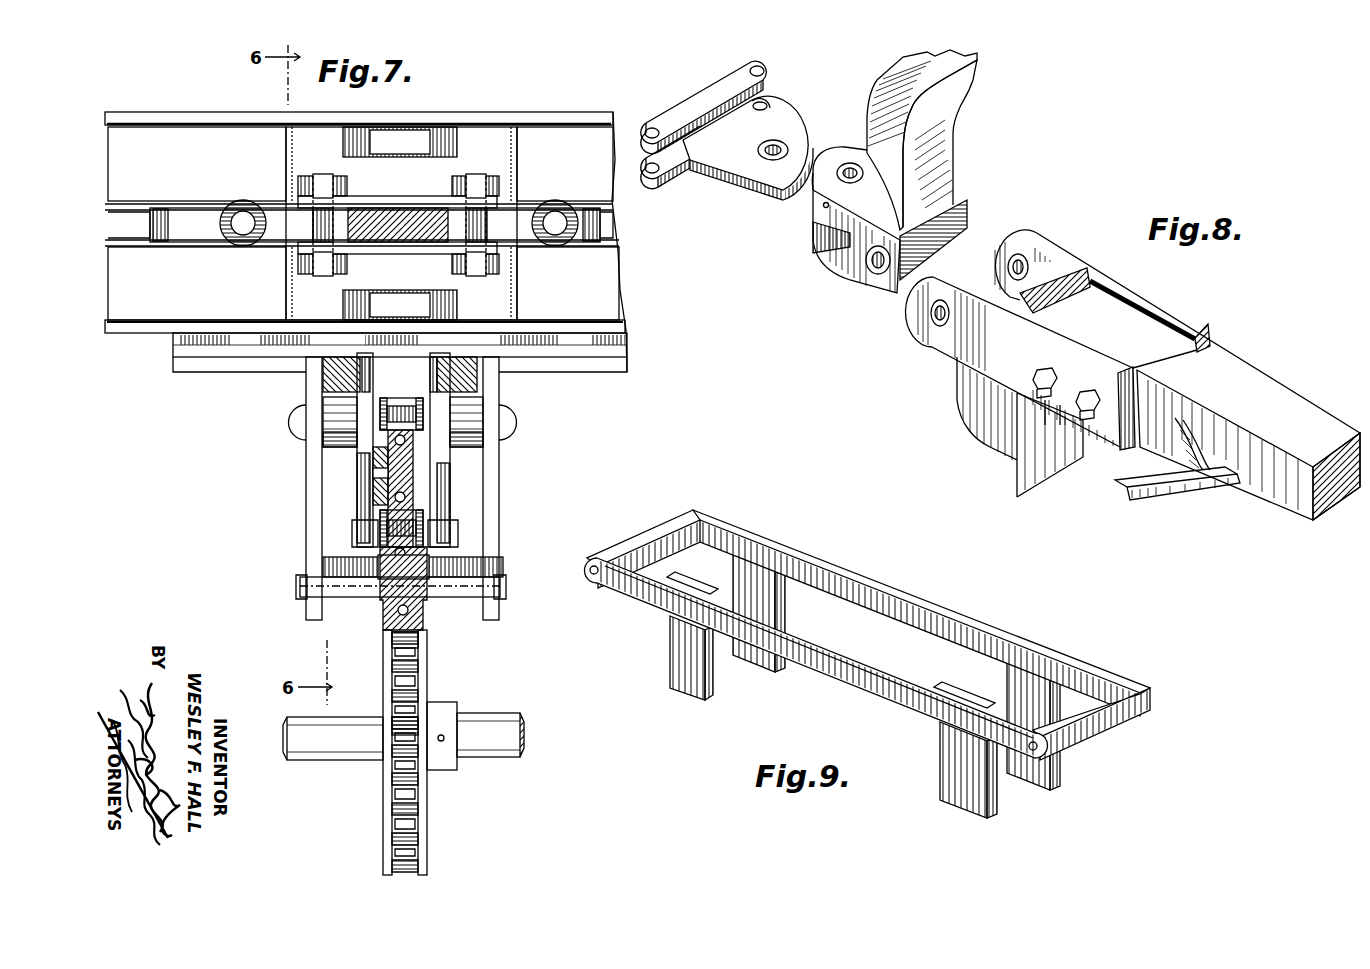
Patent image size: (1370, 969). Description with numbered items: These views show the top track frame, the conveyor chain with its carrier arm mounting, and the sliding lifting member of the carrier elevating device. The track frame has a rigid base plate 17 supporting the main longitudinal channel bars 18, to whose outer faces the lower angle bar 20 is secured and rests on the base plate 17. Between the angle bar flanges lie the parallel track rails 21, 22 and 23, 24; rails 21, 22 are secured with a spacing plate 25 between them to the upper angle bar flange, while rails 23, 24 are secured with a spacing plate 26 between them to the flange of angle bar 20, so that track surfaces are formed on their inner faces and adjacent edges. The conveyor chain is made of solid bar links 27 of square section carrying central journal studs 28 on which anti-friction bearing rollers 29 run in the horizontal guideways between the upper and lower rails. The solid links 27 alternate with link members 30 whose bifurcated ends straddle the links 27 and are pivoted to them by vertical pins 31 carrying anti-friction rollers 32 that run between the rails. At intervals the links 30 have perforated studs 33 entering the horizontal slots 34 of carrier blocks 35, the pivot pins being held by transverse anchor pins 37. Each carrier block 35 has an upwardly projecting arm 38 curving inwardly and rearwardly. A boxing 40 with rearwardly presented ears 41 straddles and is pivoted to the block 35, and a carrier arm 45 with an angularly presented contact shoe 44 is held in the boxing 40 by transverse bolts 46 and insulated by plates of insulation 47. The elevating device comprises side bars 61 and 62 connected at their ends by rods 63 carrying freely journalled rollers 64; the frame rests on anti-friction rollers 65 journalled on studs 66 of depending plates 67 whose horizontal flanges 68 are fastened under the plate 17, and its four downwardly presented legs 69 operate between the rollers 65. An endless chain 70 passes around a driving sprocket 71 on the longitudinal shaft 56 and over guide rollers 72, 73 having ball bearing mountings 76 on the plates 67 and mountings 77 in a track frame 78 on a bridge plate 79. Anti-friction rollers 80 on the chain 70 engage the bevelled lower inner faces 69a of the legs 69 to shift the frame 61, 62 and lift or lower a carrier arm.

In FIG. 7, the base plate 17 is at (627, 348).
In FIG. 7, the main longitudinal channel bars 18 is at (612, 228).
In FIG. 7, the lower angle bar 20 is at (183, 118).
In FIG. 7, the track rail 21 is at (470, 140).
In FIG. 7, the track rail 22 is at (197, 164).
In FIG. 7, the track rail 23 is at (505, 298).
In FIG. 7, the track rail 24 is at (197, 283).
In FIG. 7, the spacing plate 25 is at (400, 142).
In FIG. 7, the spacing plate 26 is at (400, 305).
In FIG. 7, the solid bar links 27 is at (195, 213).
In FIG. 7, the journal studs 28 is at (243, 211).
In FIG. 7, the anti-friction bearing rollers 29 is at (240, 241).
In FIG. 7, the link members 30 is at (398, 198).
In FIG. 8, the link members 30 is at (697, 101).
In FIG. 7, the vertical pins 31 is at (322, 274).
In FIG. 7, the anti-friction rollers 32 is at (316, 178).
In FIG. 7, the perforated studs 33 is at (418, 242).
In FIG. 8, the perforated studs 33 is at (740, 155).
In FIG. 8, the horizontal slots 34 is at (835, 238).
In FIG. 8, the carrier block 35 is at (860, 288).
In FIG. 8, the transverse anchor pins 37 is at (823, 206).
In FIG. 8, the upwardly projecting arm 38 is at (978, 73).
In FIG. 8, the boxing 40 is at (960, 343).
In FIG. 8, the rearwardly presented ears 41 is at (1010, 240).
In FIG. 8, the contact shoe 44 is at (1170, 500).
In FIG. 8, the carrier arm 45 is at (1258, 393).
In FIG. 8, the transverse bolts 46 is at (1085, 412).
In FIG. 8, the plates of insulation 47 is at (1175, 318).
In FIG. 7, the longitudinal shaft 56 is at (480, 724).
In FIG. 7, the side bar 61 is at (332, 358).
In FIG. 9, the side bar 61 is at (846, 678).
In FIG. 7, the side bar 62 is at (462, 358).
In FIG. 9, the side bar 62 is at (902, 615).
In FIG. 9, the rods 63 is at (592, 577).
In FIG. 9, the rollers 64 is at (643, 540).
In FIG. 7, the anti-friction rollers 65 is at (323, 440).
In FIG. 7, the studs 66 is at (330, 418).
In FIG. 7, the depending plates 67 is at (306, 512).
In FIG. 7, the horizontal flanges 68 is at (192, 373).
In FIG. 7, the legs 69 is at (358, 530).
In FIG. 9, the legs 69 is at (718, 672).
In FIG. 9, the bevelled lower inner faces 69a is at (778, 668).
In FIG. 7, the endless chain 70 is at (398, 405).
In FIG. 7, the driving sprocket 71 is at (400, 723).
In FIG. 7, the guide roller 72 is at (390, 634).
In FIG. 7, the guide roller 73 is at (373, 505).
In FIG. 7, the ball bearing mountings 76 is at (425, 612).
In FIG. 7, the ball bearing mountings 77 is at (413, 465).
In FIG. 7, the track frame 78 is at (360, 462).
In FIG. 7, the bridge plate 79 is at (503, 562).
In FIG. 7, the anti-friction rollers 80 is at (323, 560).